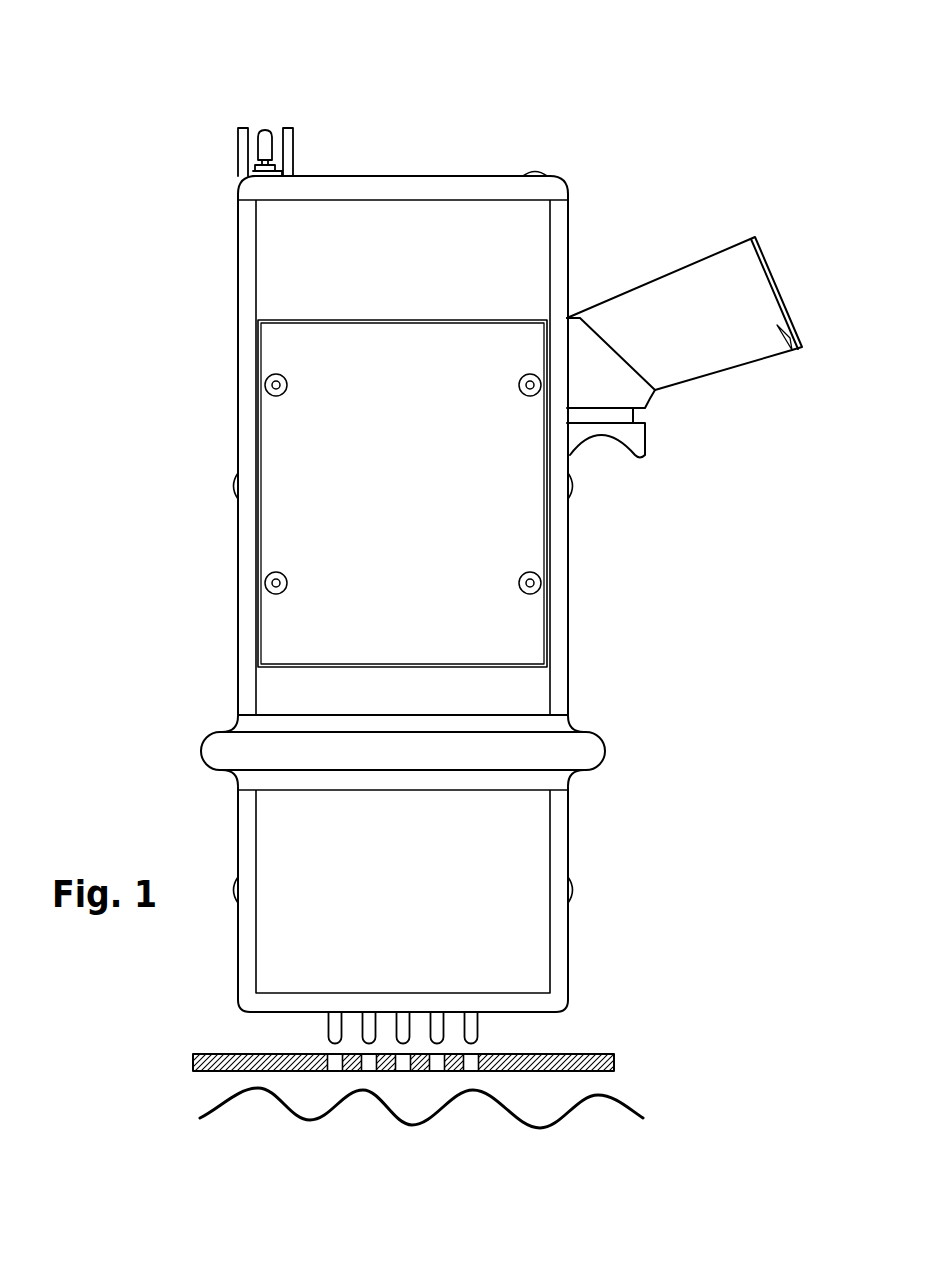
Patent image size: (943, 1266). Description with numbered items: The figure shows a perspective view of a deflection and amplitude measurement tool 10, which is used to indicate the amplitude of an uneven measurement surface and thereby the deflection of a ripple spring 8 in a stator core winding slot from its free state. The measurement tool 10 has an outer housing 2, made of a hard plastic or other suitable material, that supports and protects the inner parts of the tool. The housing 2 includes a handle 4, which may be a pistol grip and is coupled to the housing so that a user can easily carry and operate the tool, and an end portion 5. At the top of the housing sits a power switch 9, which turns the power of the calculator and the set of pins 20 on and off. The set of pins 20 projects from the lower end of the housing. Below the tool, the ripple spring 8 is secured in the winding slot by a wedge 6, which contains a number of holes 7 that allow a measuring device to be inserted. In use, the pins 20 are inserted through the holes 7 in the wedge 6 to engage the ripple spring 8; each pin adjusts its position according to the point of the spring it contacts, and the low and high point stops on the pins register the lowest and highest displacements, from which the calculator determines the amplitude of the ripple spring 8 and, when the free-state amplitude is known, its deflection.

The deflection and amplitude measurement tool 10 is at (176, 67).
The outer housing 2 is at (240, 657).
The handle 4 is at (700, 298).
The end portion 5 is at (553, 188).
The power switch 9 is at (265, 143).
The set of pins 20 is at (505, 1032).
The wedge 6 is at (215, 1062).
The holes 7 is at (338, 1064).
The ripple spring 8 is at (650, 1098).